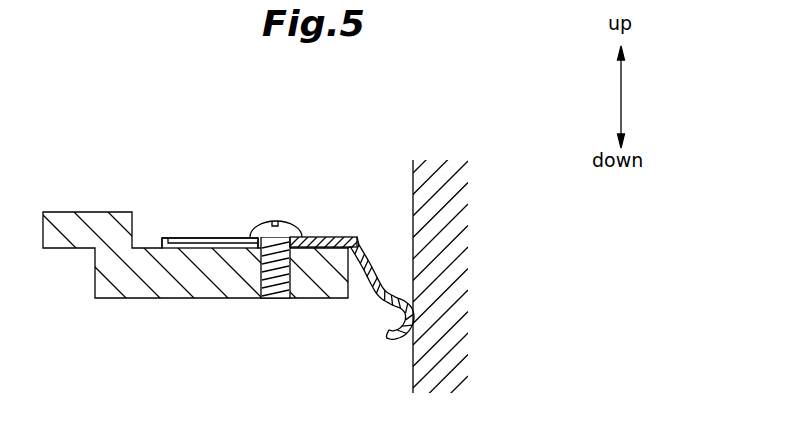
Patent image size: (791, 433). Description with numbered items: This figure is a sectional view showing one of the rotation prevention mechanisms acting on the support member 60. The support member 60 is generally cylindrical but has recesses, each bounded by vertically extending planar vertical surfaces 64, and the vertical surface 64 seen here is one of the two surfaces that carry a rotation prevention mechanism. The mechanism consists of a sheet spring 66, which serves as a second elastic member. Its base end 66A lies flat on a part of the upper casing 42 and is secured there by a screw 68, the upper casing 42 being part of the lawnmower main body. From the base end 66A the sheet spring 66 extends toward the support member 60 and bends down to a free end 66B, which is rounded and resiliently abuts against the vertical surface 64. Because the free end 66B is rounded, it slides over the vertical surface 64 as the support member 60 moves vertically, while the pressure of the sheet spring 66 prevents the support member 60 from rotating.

The upper casing 42 is at (173, 253).
The base end 66A is at (227, 246).
The screw 68 is at (284, 228).
The sheet spring 66 is at (332, 243).
The free end 66B is at (403, 315).
The vertical surface 64 is at (413, 187).
The support member 60 is at (422, 357).